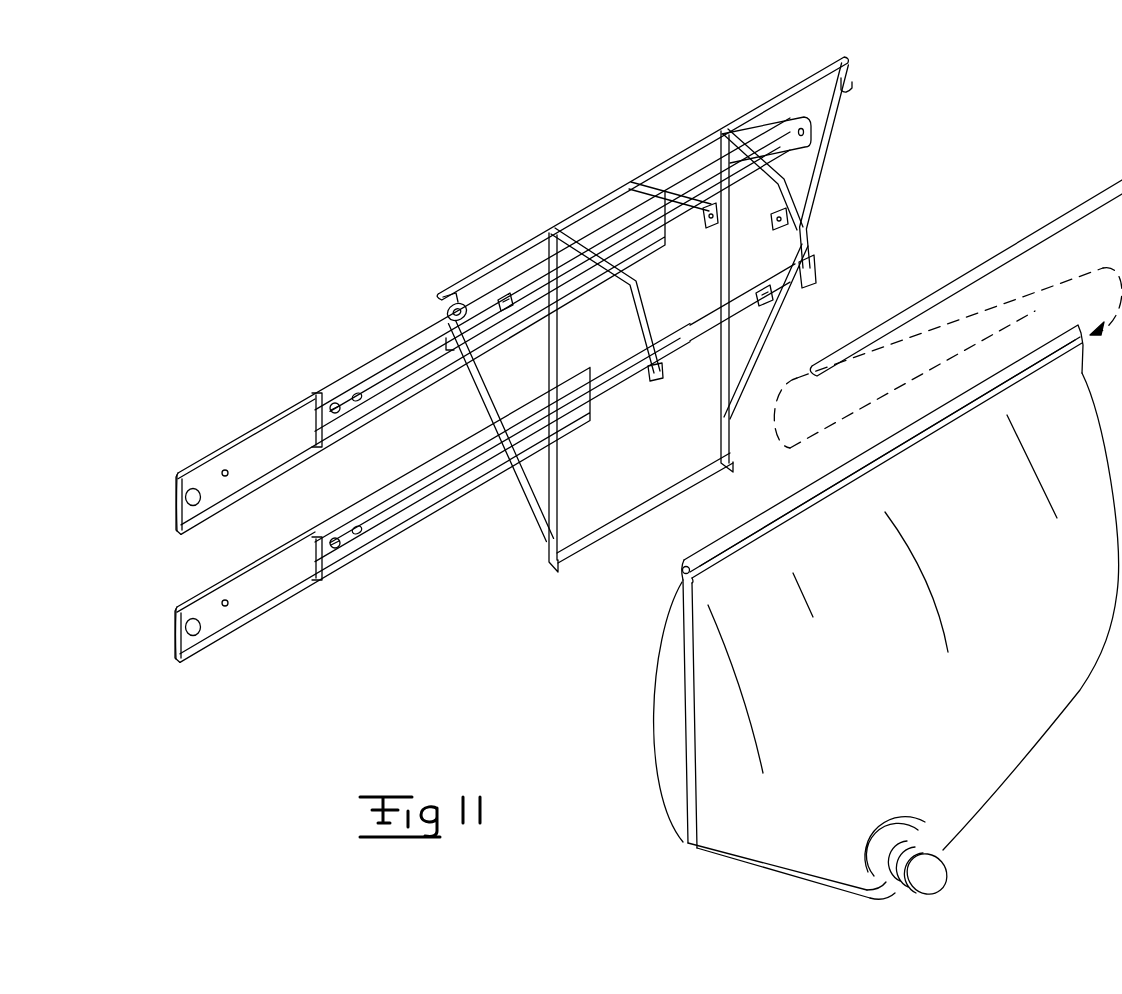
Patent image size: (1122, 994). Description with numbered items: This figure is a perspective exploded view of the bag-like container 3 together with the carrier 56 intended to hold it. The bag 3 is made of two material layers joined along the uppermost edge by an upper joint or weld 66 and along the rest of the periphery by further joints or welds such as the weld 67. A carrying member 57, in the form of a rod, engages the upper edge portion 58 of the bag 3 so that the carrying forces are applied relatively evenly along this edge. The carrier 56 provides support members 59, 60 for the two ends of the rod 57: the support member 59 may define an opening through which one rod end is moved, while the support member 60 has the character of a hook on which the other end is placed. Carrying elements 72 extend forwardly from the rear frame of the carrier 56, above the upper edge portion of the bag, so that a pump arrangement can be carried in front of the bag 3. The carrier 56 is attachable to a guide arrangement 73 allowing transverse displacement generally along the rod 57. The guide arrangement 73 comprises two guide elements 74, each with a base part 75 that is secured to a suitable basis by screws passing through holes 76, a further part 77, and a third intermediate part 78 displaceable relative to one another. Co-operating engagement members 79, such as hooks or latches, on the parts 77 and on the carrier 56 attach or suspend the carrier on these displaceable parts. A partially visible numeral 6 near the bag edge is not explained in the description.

The container 3 is at (723, 748).
The carrier 56 is at (818, 180).
The carrying member 57 is at (1073, 208).
The upper edge portion 58 is at (716, 537).
The support member 59 is at (450, 308).
The support member 60 is at (853, 88).
The upper joint or weld 66 is at (774, 512).
The joint or weld 67 is at (688, 688).
The carrying element 72 is at (706, 226).
The guide arrangement 73 is at (268, 365).
The guide element 74 is at (222, 518).
The base part 75 is at (282, 577).
The hole 76 is at (226, 470).
The further part 77 is at (788, 146).
The intermediate part 78 is at (393, 377).
The engagement member 79 is at (505, 296).
The bag element (cut off) 6 is at (1117, 381).